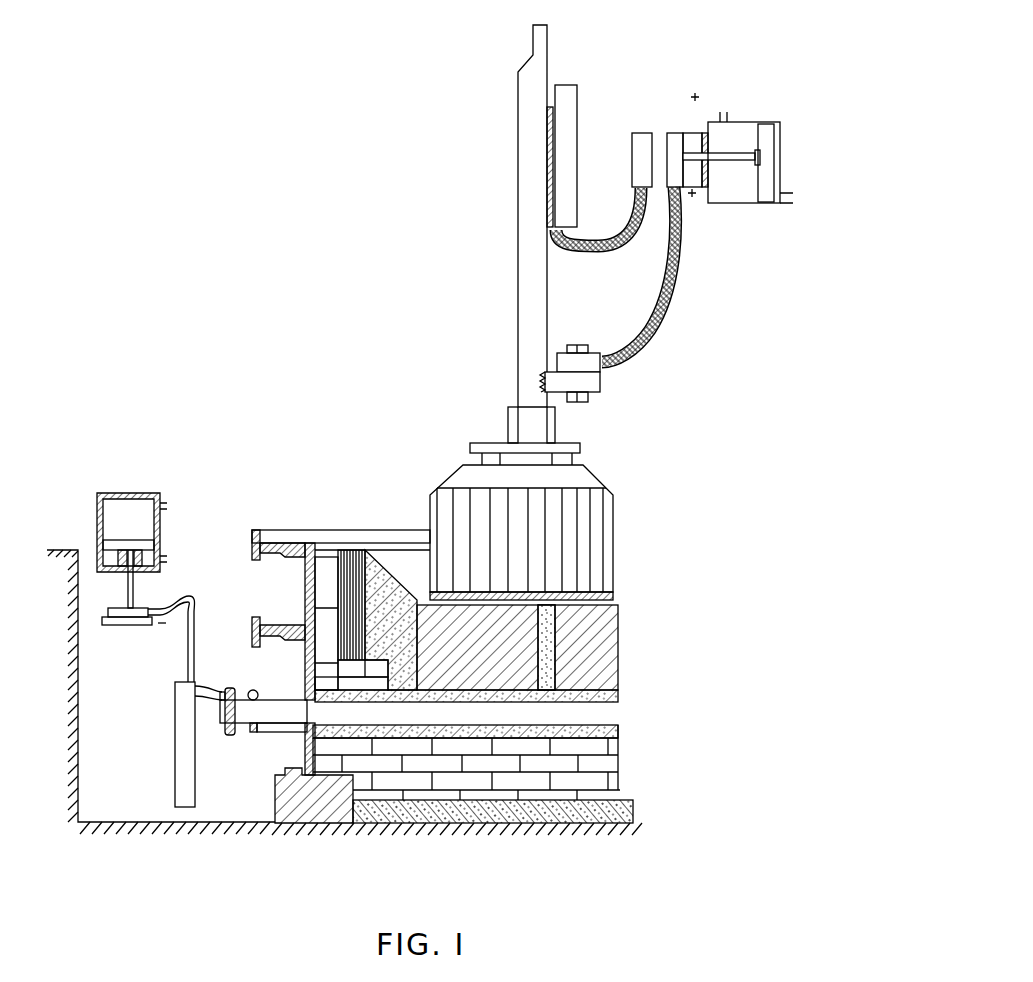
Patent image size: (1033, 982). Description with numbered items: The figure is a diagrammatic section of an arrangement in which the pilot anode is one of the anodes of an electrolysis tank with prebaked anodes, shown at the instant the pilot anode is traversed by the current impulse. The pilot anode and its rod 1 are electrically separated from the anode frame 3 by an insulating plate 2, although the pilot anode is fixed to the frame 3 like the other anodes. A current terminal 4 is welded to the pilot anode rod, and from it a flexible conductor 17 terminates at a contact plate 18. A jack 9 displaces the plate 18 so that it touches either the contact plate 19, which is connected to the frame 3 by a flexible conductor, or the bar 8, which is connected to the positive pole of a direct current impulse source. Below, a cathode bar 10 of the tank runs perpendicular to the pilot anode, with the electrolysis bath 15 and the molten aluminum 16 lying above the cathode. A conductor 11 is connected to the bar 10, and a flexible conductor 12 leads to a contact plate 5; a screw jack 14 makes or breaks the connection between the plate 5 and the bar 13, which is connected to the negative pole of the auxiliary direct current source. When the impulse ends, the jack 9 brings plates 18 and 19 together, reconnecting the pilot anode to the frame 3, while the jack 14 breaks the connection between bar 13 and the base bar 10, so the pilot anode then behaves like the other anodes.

The pilot anode and its rod 1 is at (517, 258).
The insulating plate 2 is at (550, 231).
The anode frame 3 is at (578, 178).
The current terminal 4 is at (602, 385).
The contact plate 5 is at (116, 607).
The bar 8 is at (693, 131).
The jack 9 is at (740, 203).
The cathode bar 10 is at (261, 710).
The conductor 11 is at (195, 650).
The flexible conductor 12 is at (192, 598).
The bar 13 is at (128, 628).
The screw jack 14 is at (135, 517).
The electrolysis bath 15 is at (415, 568).
The molten aluminum 16 is at (610, 602).
The flexible conductor 17 is at (652, 313).
The contact plate 18 is at (677, 132).
The contact plate 19 is at (641, 131).